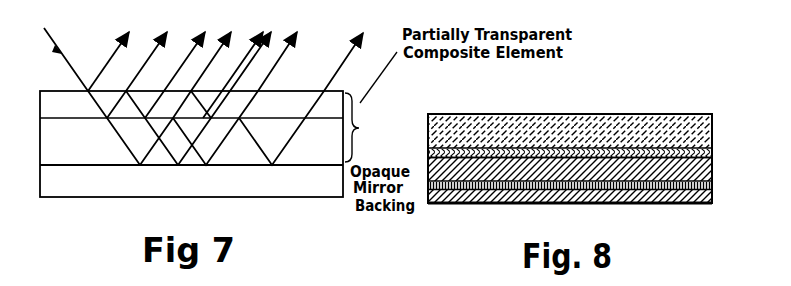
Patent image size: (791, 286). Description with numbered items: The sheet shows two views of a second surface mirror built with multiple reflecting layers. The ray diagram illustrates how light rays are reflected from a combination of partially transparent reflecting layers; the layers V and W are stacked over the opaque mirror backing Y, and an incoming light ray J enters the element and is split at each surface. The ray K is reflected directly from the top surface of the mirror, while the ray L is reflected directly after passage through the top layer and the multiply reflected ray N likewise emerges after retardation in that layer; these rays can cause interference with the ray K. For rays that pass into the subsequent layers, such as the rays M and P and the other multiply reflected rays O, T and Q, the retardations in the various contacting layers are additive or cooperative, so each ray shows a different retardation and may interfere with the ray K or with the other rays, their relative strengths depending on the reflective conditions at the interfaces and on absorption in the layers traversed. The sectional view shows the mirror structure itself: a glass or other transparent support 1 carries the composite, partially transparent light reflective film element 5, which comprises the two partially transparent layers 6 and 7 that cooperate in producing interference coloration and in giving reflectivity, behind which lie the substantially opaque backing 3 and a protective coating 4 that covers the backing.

In FIG. 8, the transparent support 1 is at (717, 133).
In FIG. 8, the partially transparent layer 6 is at (717, 152).
In FIG. 8, the composite, partially transparent light reflective film element 5 is at (716, 163).
In FIG. 8, the partially transparent layer 7 is at (717, 175).
In FIG. 8, the substantially opaque backing 3 is at (715, 186).
In FIG. 8, the protective coating 4 is at (717, 198).
In FIG. 7, the light ray J is at (65, 62).
In FIG. 7, the ray reflected from top surface K is at (110, 57).
In FIG. 7, the directly reflected ray L is at (150, 57).
In FIG. 7, the multiply reflected ray N is at (184, 54).
In FIG. 7, the multiply reflected ray M is at (208, 52).
In FIG. 7, the multiply reflected ray Q is at (246, 60).
In FIG. 7, the multiply reflected ray P is at (250, 70).
In FIG. 7, the multiply reflected ray O is at (277, 67).
In FIG. 7, the multiply reflected ray T is at (341, 61).
In FIG. 7, the first layer V is at (30, 104).
In FIG. 7, the second layer W is at (32, 139).
In FIG. 7, the opaque mirror backing Y is at (30, 178).